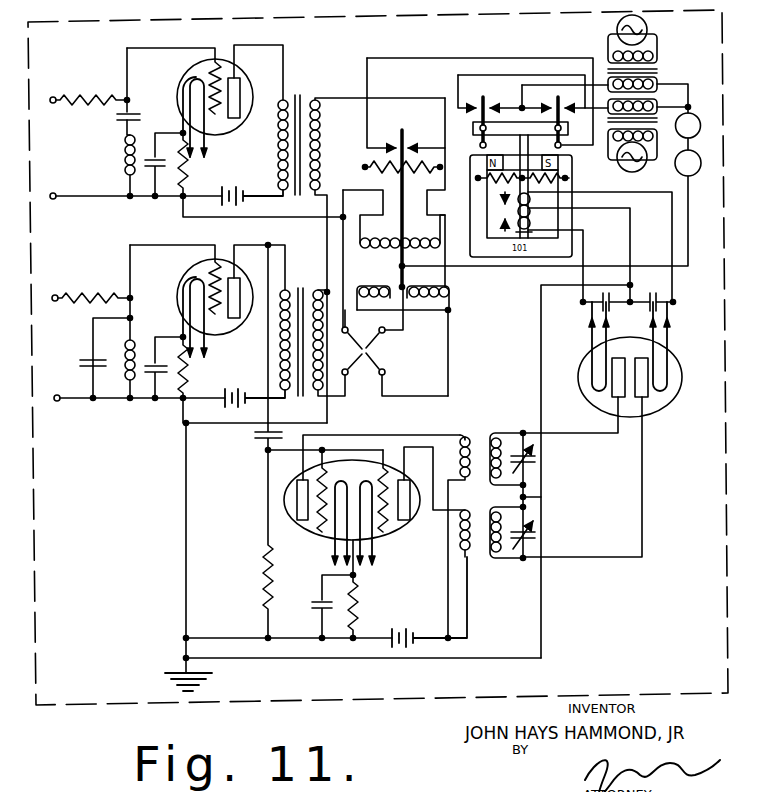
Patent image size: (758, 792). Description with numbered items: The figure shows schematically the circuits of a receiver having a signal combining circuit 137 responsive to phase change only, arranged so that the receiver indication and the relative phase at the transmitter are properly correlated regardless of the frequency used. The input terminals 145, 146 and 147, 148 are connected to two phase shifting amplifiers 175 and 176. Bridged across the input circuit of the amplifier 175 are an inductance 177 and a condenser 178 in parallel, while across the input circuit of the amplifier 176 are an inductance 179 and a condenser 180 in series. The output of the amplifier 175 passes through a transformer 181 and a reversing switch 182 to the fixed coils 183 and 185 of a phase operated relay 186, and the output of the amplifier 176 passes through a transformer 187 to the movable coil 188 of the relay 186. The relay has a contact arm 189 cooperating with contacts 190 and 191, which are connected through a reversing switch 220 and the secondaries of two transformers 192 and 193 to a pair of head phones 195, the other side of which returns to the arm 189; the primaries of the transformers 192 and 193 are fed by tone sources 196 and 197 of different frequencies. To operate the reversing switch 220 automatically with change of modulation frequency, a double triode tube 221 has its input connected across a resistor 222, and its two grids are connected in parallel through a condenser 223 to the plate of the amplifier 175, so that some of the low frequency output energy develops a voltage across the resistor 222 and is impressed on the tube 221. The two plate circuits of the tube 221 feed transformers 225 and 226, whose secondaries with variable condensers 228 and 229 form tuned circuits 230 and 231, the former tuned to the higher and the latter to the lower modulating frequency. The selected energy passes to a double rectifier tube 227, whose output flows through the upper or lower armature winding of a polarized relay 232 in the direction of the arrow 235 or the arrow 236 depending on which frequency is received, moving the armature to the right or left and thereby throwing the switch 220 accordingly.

The signal combining circuit 137 is at (133, 705).
The input terminal 145 is at (54, 400).
The input terminal 146 is at (51, 298).
The input terminal 147 is at (51, 198).
The input terminal 148 is at (49, 103).
The phase shifting amplifier 175 is at (172, 284).
The phase shifting amplifier 176 is at (172, 84).
The inductance 177 is at (138, 348).
The condenser 178 is at (82, 366).
The inductance 179 is at (124, 163).
The condenser 180 is at (114, 117).
The transformer 181 is at (312, 332).
The reversing switch 182 is at (373, 350).
The fixed coil 183 is at (380, 309).
The fixed coil 185 is at (440, 287).
The phase operated relay 186 is at (385, 276).
The transformer 187 is at (297, 78).
The movable coil 188 is at (394, 219).
The contact arm 189 is at (384, 175).
The contact 190 is at (412, 145).
The contact 191 is at (391, 145).
The transformer 192 is at (649, 99).
The transformer 193 is at (657, 70).
The head phones 195 is at (703, 142).
The tone source 196 is at (620, 162).
The tone source 197 is at (647, 19).
The reversing switch 220 is at (512, 101).
The double triode tube 221 is at (392, 527).
The resistor 222 is at (266, 587).
The condenser 223 is at (256, 442).
The transformer 225 is at (468, 432).
The transformer 226 is at (483, 516).
The double rectifier tube 227 is at (655, 404).
The variable condenser 228 is at (537, 464).
The variable condenser 229 is at (540, 541).
The tuned circuit 230 is at (504, 435).
The tuned circuit 231 is at (508, 563).
The polarized relay 232 is at (569, 222).
The arrow 235 is at (503, 197).
The arrow 236 is at (503, 228).